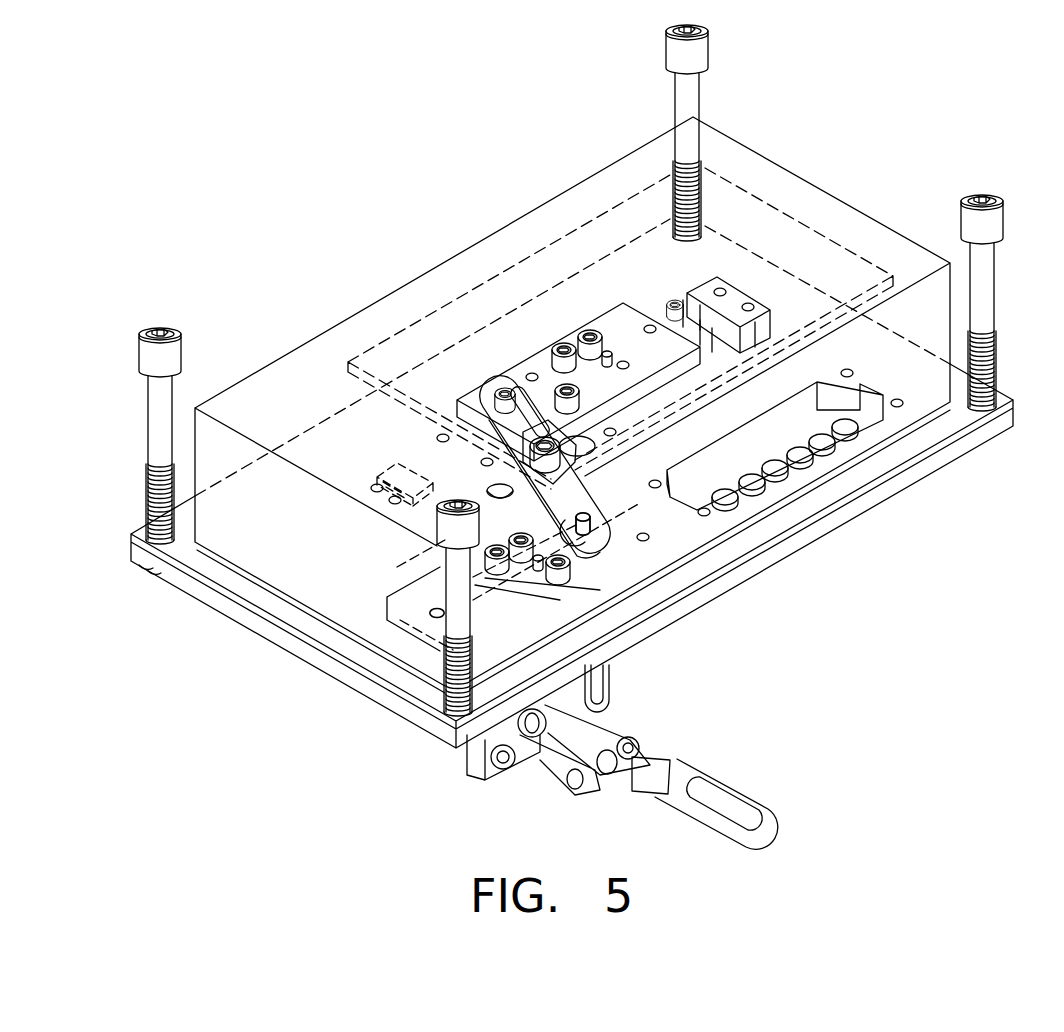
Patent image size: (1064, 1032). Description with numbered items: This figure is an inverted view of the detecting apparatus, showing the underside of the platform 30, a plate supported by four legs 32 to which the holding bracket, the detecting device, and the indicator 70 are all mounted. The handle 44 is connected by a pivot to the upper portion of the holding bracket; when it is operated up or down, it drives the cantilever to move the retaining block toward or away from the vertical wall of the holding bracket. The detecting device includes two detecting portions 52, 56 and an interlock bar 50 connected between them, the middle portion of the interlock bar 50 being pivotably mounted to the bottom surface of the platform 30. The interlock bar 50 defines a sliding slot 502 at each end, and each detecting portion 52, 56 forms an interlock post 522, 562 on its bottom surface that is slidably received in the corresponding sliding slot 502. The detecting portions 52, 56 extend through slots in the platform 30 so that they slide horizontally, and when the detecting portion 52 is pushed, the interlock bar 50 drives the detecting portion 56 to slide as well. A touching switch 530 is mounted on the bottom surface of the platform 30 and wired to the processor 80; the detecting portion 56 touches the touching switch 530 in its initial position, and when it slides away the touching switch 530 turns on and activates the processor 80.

The platform 30 is at (347, 478).
The legs 32 is at (680, 97).
The handle 44 is at (695, 804).
The interlock bar 50 is at (488, 398).
The sliding slot 502 is at (560, 490).
The detecting portion 52 is at (400, 627).
The interlock post 522 is at (600, 528).
The touching switch 530 is at (737, 297).
The detecting portion 56 is at (622, 322).
The interlock post 562 is at (500, 378).
The indicator 70 is at (806, 420).
The processor 80 is at (395, 395).